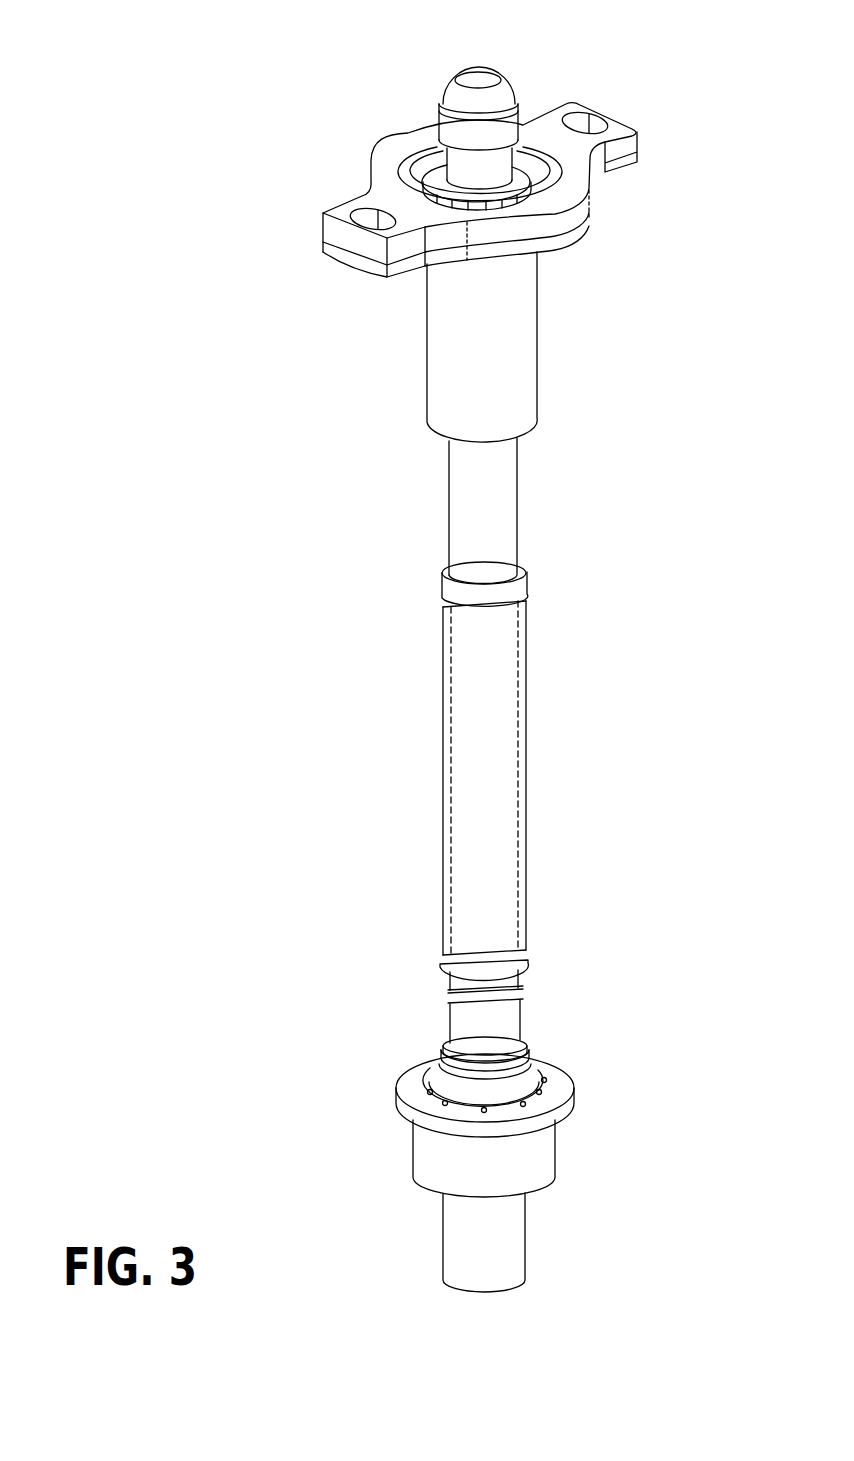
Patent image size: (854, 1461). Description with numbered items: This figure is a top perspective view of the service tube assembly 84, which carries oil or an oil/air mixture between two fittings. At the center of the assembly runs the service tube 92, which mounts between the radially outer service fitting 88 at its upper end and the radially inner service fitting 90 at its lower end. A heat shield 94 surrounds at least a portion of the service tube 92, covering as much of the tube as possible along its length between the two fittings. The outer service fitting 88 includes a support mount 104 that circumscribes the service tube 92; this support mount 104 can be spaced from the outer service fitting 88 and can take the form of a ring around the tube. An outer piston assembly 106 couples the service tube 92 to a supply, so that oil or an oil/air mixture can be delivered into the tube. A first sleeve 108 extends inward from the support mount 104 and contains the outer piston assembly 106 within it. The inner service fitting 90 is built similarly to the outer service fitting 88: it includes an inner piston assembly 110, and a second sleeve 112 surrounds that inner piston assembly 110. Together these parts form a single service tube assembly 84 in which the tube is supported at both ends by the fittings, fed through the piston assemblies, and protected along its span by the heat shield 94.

The drive shaft assembly 84 is at (266, 342).
The outer service fitting 88 is at (358, 150).
The inner service fitting 90 is at (570, 1139).
The service tube 92 is at (518, 512).
The heat shield 94 is at (525, 718).
The support mount 104 is at (603, 116).
The outer piston assembly 106 is at (432, 82).
The first sleeve 108 is at (518, 339).
The inner piston assembly 110 is at (543, 1074).
The second sleeve 112 is at (562, 1088).